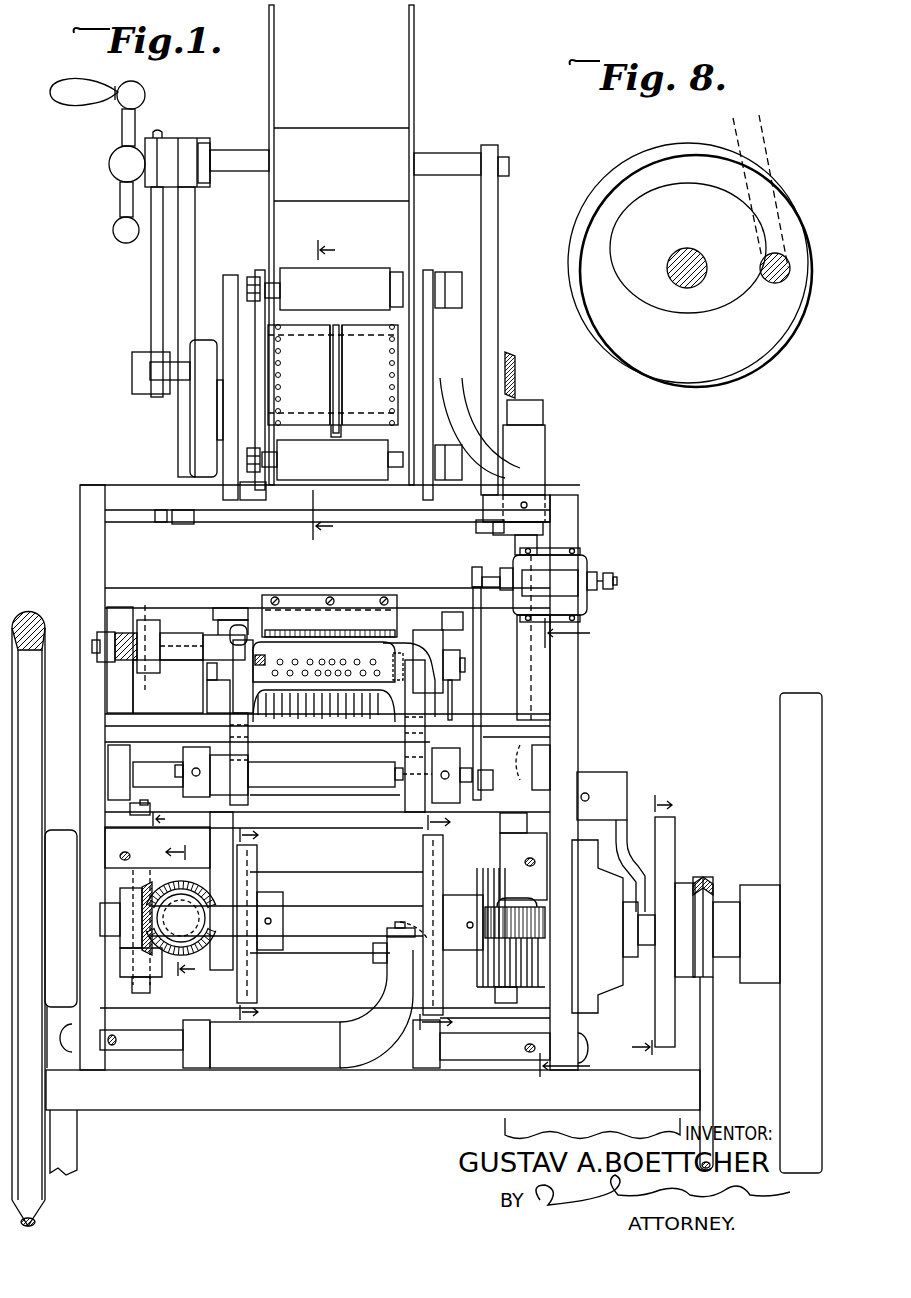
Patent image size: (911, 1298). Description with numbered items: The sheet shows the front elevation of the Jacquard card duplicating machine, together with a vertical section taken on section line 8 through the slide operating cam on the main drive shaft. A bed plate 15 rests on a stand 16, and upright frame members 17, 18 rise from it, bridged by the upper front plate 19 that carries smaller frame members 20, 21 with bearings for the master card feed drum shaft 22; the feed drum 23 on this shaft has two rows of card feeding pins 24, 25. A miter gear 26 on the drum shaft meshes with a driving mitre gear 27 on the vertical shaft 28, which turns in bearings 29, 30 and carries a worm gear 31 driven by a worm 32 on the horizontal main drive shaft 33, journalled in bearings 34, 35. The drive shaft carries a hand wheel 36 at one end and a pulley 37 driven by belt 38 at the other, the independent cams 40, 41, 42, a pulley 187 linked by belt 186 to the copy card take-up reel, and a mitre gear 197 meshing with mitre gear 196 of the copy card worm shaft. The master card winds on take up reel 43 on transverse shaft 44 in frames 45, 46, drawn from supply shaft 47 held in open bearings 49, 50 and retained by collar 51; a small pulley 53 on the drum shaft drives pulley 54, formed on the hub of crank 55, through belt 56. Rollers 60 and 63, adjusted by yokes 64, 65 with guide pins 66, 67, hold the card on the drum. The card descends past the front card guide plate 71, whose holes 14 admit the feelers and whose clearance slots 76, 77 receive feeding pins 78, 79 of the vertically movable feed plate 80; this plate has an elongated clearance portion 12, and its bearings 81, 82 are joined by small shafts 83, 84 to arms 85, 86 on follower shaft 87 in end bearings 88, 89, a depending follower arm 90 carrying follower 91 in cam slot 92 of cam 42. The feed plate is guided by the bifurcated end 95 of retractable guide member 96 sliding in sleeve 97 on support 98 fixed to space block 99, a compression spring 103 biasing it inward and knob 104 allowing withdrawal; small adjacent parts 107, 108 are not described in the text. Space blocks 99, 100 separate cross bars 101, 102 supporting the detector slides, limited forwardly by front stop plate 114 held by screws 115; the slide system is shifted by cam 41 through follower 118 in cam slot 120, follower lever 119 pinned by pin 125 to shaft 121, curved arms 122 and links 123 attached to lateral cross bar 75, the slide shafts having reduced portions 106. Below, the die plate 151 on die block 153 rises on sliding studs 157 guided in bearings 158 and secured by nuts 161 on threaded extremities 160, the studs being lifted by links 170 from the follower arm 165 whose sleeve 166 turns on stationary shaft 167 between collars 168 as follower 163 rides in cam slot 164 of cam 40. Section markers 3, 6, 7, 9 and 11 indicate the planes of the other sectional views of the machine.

In FIG. 1, the section line 3 is at (573, 848).
In FIG. 1, the section line 6 / pin 6 is at (336, 332).
In FIG. 1, the section line 7 is at (256, 922).
In FIG. 1, the section line 8 is at (652, 925).
In FIG. 1, the section line 9 is at (181, 895).
In FIG. 1, the section line 11 is at (337, 389).
In FIG. 1, the type carrier 12 is at (274, 670).
In FIG. 1, the holes 14 is at (356, 672).
In FIG. 1, the base plate 15 is at (310, 1112).
In FIG. 1, the base extension 16 is at (505, 1133).
In FIG. 1, the left frame post 17 is at (80, 540).
In FIG. 1, the right frame post 18 is at (570, 718).
In FIG. 1, the top frame bar 19 is at (125, 493).
In FIG. 1, the plate 20 is at (232, 278).
In FIG. 1, the post 21 is at (428, 332).
In FIG. 1, the shaft 22 is at (132, 380).
In FIG. 1, the plate 23 is at (333, 375).
In FIG. 1, the holes 24 is at (283, 370).
In FIG. 1, the holes 25 is at (389, 365).
In FIG. 1, the screw 26 is at (512, 362).
In FIG. 1, the block 27 is at (520, 402).
In FIG. 1, the counter 28 is at (516, 541).
In FIG. 1, the block 29 is at (500, 848).
In FIG. 1, the block 30 is at (485, 510).
In FIG. 1, the gear 31 is at (533, 932).
In FIG. 1, the gear teeth 32 is at (527, 995).
In FIG. 1, the shaft 33 is at (308, 908).
In FIG. 8, the shaft 33 is at (685, 250).
In FIG. 1, the bracket 34 is at (58, 838).
In FIG. 1, the hub 35 is at (605, 985).
In FIG. 1, the post 36 is at (790, 710).
In FIG. 1, the bar 37 is at (48, 630).
In FIG. 1, the bar tip 38 is at (42, 1218).
In FIG. 1, the bar 40 is at (430, 866).
In FIG. 1, the disc 41 is at (675, 845).
In FIG. 8, the disc 41 is at (696, 392).
In FIG. 1, the bar 42 is at (257, 858).
In FIG. 1, the rails 43 is at (342, 130).
In FIG. 1, the beam 44 is at (452, 163).
In FIG. 1, the post 45 is at (195, 217).
In FIG. 1, the post 46 is at (498, 210).
In FIG. 1, the bar 47 is at (255, 522).
In FIG. 1, the block 49 is at (187, 524).
In FIG. 1, the block 50 is at (478, 530).
In FIG. 1, the block 51 is at (160, 522).
In FIG. 1, the block 53 is at (140, 375).
In FIG. 1, the block 54 is at (172, 145).
In FIG. 1, the handle 55 is at (75, 105).
In FIG. 1, the post 56 is at (151, 288).
In FIG. 1, the roller 60 is at (363, 481).
In FIG. 1, the roller 63 is at (297, 270).
In FIG. 1, the block 64 is at (255, 492).
In FIG. 1, the nut 65 is at (255, 277).
In FIG. 1, the nut 66 is at (245, 425).
In FIG. 1, the hub 67 is at (240, 330).
In FIG. 1, the bracket 71 is at (403, 650).
In FIG. 1, the block 75 is at (443, 648).
In FIG. 1, the arm 76 is at (230, 742).
In FIG. 1, the arm 77 is at (415, 736).
In FIG. 1, the block 78 is at (230, 675).
In FIG. 1, the block 79 is at (410, 666).
In FIG. 1, the bracket 80 is at (217, 640).
In FIG. 1, the block 81 is at (248, 757).
In FIG. 1, the arm 82 is at (410, 770).
In FIG. 1, the shaft 83 is at (248, 785).
In FIG. 1, the stud 84 is at (395, 786).
In FIG. 1, the block 85 is at (184, 760).
In FIG. 1, the rod 86 is at (450, 755).
In FIG. 1, the bar 87 is at (344, 772).
In FIG. 1, the block 88 is at (108, 778).
In FIG. 1, the block 89 is at (545, 768).
In FIG. 1, the bar 90 is at (225, 856).
In FIG. 1, the bar 91 is at (255, 970).
In FIG. 1, the bar 92 is at (250, 993).
In FIG. 1, the pivot 95 is at (243, 640).
In FIG. 1, the block 96 is at (224, 649).
In FIG. 1, the rod 97 is at (180, 661).
In FIG. 1, the block 98 is at (145, 674).
In FIG. 1, the block 99 is at (119, 660).
In FIG. 1, the post 100 is at (548, 676).
In FIG. 1, the cross bar 101 is at (122, 595).
In FIG. 1, the bar 102 is at (152, 742).
In FIG. 1, the axis 103 is at (145, 639).
In FIG. 1, the nut 104 is at (92, 647).
In FIG. 1, the comb 106 is at (320, 745).
In FIG. 1, the block 107 is at (226, 620).
In FIG. 1, the bracket 108 is at (441, 625).
In FIG. 1, the plate 114 is at (302, 600).
In FIG. 1, the screws 115 is at (385, 600).
In FIG. 8, the pin 118 is at (760, 270).
In FIG. 1, the bracket 119 is at (630, 782).
In FIG. 8, the bracket 119 is at (768, 138).
In FIG. 8, the cam ring 120 is at (648, 326).
In FIG. 1, the block 121 is at (500, 810).
In FIG. 1, the rod 122 is at (455, 702).
In FIG. 1, the block 123 is at (460, 662).
In FIG. 1, the pin 125 is at (606, 788).
In FIG. 1, the bar 151 is at (297, 840).
In FIG. 1, the bar 153 is at (290, 878).
In FIG. 1, the block 157 is at (143, 992).
In FIG. 1, the block 158 is at (128, 985).
In FIG. 1, the rod 160 is at (148, 805).
In FIG. 1, the block 161 is at (134, 812).
In FIG. 1, the link 163 is at (394, 923).
In FIG. 1, the link 164 is at (438, 1000).
In FIG. 1, the pipe 165 is at (385, 980).
In FIG. 1, the pipe 166 is at (312, 1025).
In FIG. 1, the rod 167 is at (142, 1060).
In FIG. 1, the block 168 is at (197, 1066).
In FIG. 1, the block 170 is at (200, 1015).
In FIG. 1, the rod 186 is at (711, 1066).
In FIG. 1, the pulley 187 is at (713, 895).
In FIG. 1, the worm gear 196 is at (206, 900).
In FIG. 1, the bevel gear 197 is at (150, 870).